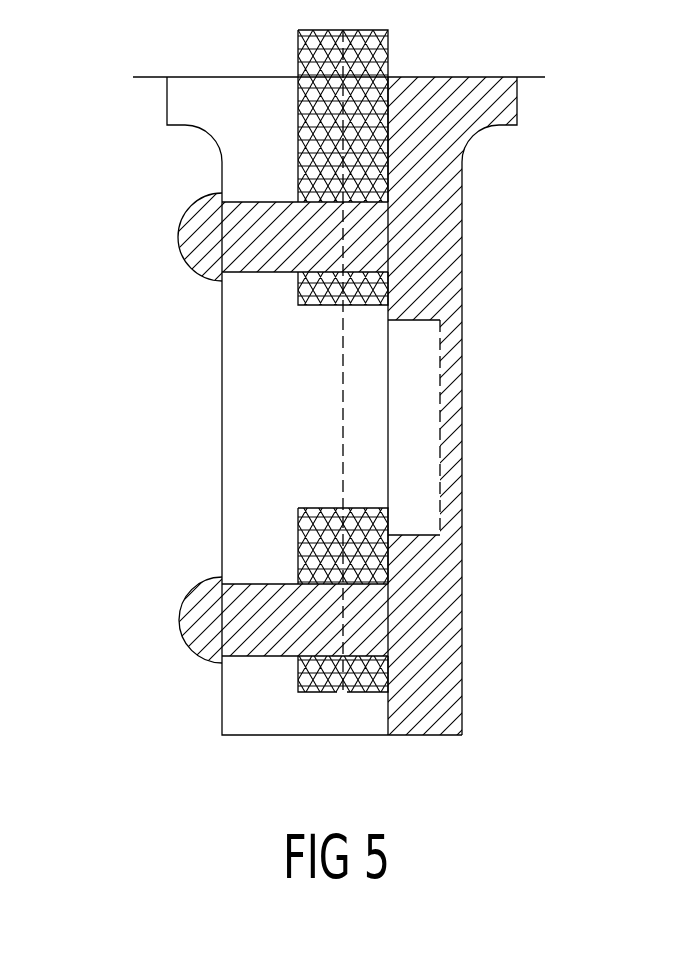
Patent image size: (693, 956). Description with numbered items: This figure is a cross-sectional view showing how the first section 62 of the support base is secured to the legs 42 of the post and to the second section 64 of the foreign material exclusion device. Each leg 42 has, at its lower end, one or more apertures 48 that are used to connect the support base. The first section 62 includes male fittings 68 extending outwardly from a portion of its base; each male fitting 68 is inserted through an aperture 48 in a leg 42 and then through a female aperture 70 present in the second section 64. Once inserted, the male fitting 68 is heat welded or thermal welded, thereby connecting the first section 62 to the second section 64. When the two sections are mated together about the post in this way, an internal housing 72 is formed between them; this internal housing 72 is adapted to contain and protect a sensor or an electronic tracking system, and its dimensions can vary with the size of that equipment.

The leg 42 is at (317, 692).
The aperture 48 is at (340, 652).
The first section 62 is at (463, 387).
The second section 64 is at (222, 407).
The male fitting 68 is at (195, 635).
The female aperture 70 is at (250, 202).
The internal housing 72 is at (445, 533).